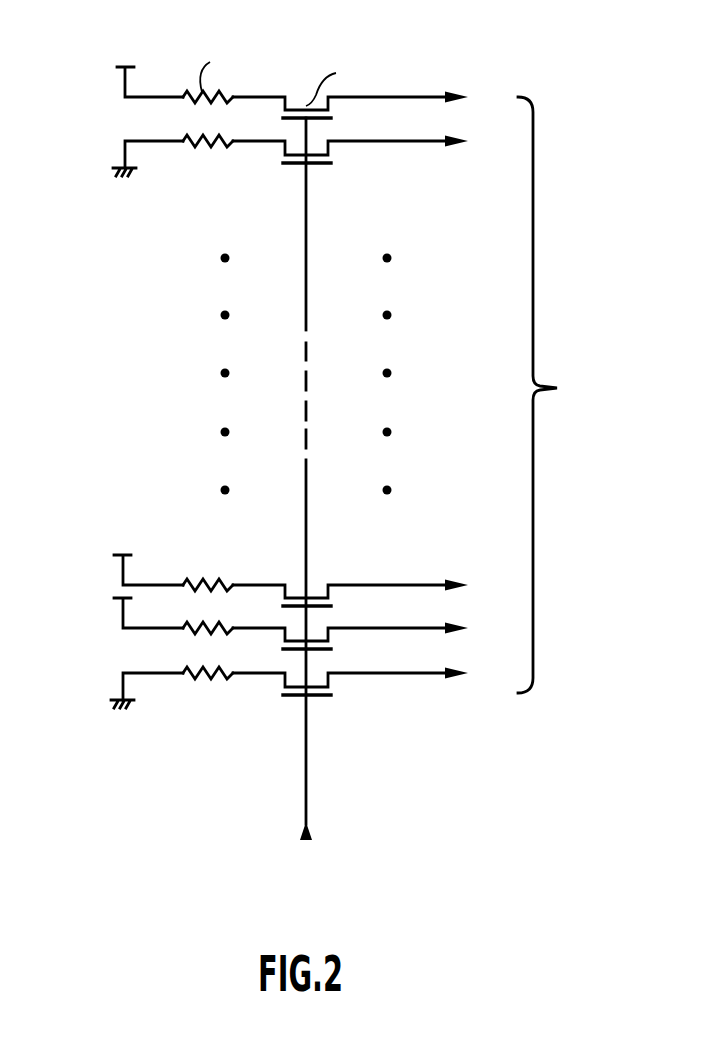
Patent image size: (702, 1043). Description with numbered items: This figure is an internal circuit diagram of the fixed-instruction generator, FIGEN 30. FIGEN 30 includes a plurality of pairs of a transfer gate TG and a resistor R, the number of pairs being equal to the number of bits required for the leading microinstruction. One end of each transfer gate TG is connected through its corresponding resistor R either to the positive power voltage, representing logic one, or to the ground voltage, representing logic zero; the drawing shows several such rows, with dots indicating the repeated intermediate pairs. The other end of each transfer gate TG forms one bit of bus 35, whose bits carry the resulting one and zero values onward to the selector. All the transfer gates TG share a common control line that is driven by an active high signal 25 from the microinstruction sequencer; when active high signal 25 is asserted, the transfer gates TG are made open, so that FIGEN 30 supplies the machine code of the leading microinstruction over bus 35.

The active high signal 25 is at (310, 830).
The fixed-instruction generator (FIGEN) 30 is at (290, 76).
The bus 35 is at (321, 361).